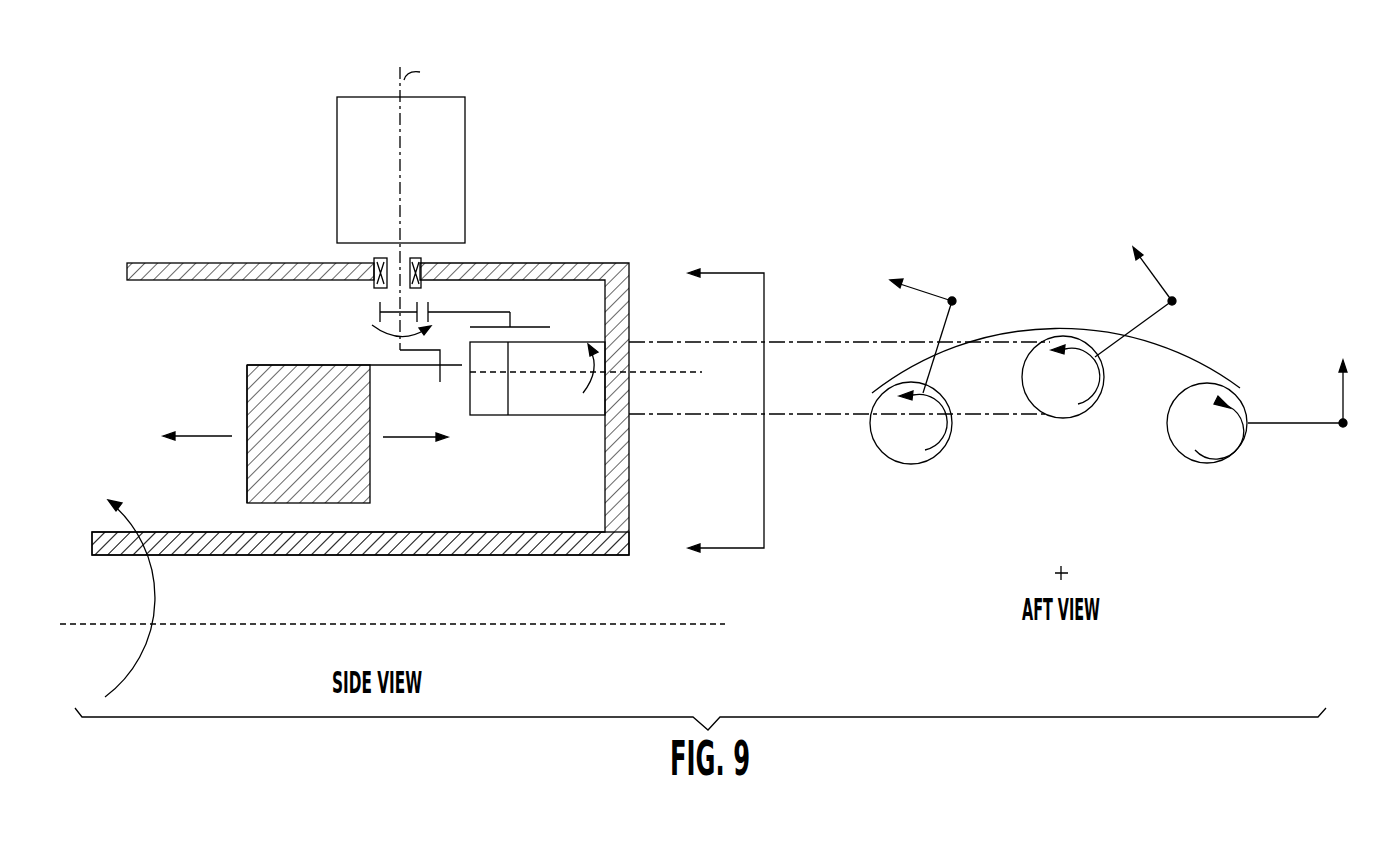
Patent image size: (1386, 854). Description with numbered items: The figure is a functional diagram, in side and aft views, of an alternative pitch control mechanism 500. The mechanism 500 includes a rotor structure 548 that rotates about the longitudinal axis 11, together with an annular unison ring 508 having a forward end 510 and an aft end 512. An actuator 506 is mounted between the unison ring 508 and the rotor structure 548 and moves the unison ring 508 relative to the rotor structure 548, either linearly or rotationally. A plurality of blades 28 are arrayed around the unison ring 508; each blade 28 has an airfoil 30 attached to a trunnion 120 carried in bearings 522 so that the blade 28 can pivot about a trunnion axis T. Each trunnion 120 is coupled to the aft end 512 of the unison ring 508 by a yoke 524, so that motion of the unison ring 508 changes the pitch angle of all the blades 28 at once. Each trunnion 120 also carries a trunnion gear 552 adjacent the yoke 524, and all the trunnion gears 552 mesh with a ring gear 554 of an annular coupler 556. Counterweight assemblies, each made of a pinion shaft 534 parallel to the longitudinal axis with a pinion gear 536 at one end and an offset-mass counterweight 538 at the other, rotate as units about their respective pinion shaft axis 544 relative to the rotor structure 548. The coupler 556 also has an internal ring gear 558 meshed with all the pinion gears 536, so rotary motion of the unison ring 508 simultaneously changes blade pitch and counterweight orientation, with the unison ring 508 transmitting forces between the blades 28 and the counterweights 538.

The longitudinal axis 11 is at (550, 625).
The blade 28 is at (430, 204).
The airfoil 30 is at (366, 128).
The trunnion 120 is at (376, 258).
The pitch control mechanism 500 is at (634, 178).
The actuator 506 is at (245, 469).
The annular unison ring 508 is at (305, 365).
The forward end 510 is at (247, 365).
The aft end 512 is at (415, 367).
The bearings 522 is at (418, 255).
The yoke 524 is at (400, 352).
The pinion shaft 534 is at (528, 373).
The pinion gear 536 is at (495, 415).
The counterweight 538 is at (950, 327).
The pinion shaft axis 544 is at (655, 372).
The rotor structure 548 is at (192, 556).
The trunnion gear 552 is at (380, 318).
The ring gear 554 is at (435, 312).
The annular coupler 556 is at (530, 309).
The internal ring gear 558 is at (541, 327).